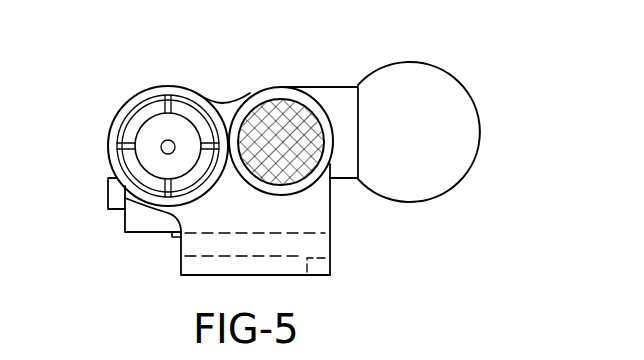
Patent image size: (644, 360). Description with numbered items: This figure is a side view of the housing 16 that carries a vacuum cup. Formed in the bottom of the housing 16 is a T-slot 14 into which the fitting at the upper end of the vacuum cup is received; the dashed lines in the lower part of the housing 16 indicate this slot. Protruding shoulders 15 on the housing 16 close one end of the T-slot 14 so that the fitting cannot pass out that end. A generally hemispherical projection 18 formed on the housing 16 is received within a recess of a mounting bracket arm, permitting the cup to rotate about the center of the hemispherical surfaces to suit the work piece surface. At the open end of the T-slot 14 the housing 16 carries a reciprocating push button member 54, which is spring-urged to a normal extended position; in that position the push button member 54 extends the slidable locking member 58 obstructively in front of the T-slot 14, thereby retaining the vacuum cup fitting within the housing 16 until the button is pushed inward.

The T-slot 14 is at (207, 255).
The protruding shoulders 15 is at (305, 262).
The housing 16 is at (242, 95).
The hemispherical projection 18 is at (396, 62).
The push button member 54 is at (107, 200).
The slidable locking member 58 is at (173, 238).